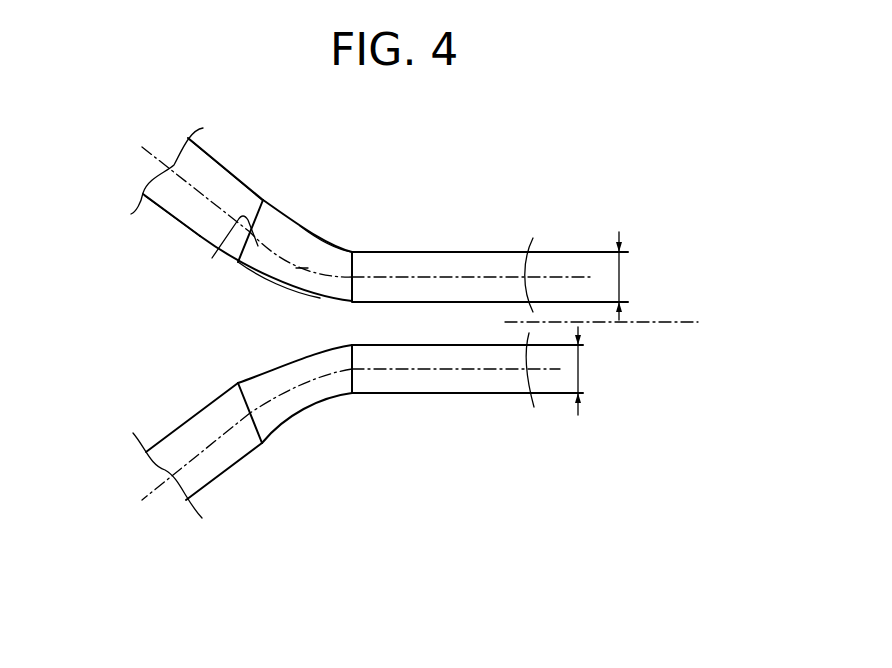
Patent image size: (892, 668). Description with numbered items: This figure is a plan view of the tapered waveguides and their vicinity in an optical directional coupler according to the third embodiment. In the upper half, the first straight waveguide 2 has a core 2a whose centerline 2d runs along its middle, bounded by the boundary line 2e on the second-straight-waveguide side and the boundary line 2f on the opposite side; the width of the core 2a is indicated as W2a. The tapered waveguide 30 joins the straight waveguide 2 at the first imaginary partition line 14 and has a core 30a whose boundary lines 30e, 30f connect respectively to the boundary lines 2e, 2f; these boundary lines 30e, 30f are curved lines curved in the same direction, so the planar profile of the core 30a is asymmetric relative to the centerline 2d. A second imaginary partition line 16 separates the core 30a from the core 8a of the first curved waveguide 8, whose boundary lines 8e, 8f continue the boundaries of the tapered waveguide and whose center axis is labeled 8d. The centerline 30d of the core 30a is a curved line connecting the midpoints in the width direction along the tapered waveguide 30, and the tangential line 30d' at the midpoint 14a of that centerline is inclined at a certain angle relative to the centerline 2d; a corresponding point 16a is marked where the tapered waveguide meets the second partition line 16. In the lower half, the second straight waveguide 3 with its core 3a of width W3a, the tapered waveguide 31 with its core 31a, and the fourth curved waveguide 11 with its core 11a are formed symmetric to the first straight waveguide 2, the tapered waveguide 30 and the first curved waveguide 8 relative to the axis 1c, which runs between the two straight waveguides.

The axis 1c is at (667, 325).
The first straight waveguide 2 is at (444, 243).
The core of the first straight waveguide 2a is at (412, 267).
The centerline 2d is at (574, 276).
The boundary line 2e is at (440, 302).
The boundary line 2f is at (478, 251).
The second straight waveguide 3 is at (465, 403).
The inner surface of second tube 3a is at (421, 381).
The first curved waveguide 8 is at (223, 157).
The core of the curved waveguide 8a is at (192, 167).
The center axis of connecting tube 8d is at (141, 150).
The boundary line 8e is at (176, 216).
The boundary line 8f is at (207, 152).
The fourth curved waveguide 11 is at (253, 467).
The inner surface of second connecting tube 11a is at (205, 463).
The first imaginary partition line 14 is at (354, 264).
The midpoint 14a is at (354, 278).
The second imaginary partition line 16 is at (262, 201).
The protrusion 16a is at (247, 220).
The tapered waveguide 30 is at (319, 218).
The core of the tapered waveguide 30a is at (289, 233).
The centerline of the tapered waveguide core 30d is at (242, 285).
The tangential line 30d' is at (292, 308).
The boundary line 30e is at (270, 282).
The boundary line 30f is at (333, 245).
The tapered waveguide 31 is at (330, 412).
The inner surface of second bent portion 31a is at (295, 398).
The width of first tube W2a is at (647, 276).
The width of second tube W3a is at (606, 371).